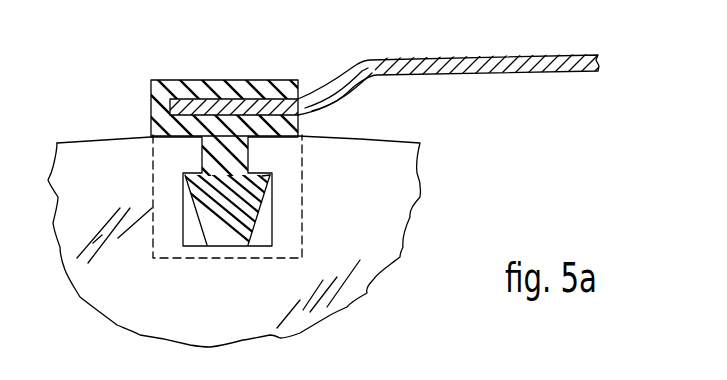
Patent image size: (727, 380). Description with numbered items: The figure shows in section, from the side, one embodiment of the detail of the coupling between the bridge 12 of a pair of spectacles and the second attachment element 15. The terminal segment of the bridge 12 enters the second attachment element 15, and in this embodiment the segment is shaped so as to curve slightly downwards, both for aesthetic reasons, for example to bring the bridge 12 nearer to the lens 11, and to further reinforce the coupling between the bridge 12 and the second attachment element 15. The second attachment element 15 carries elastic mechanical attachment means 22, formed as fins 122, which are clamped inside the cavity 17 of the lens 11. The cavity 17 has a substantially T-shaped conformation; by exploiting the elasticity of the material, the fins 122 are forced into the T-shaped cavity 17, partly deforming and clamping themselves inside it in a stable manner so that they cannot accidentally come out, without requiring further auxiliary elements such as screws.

The lens 11 is at (412, 175).
The bridge 12 is at (535, 62).
The second attachment element 15 is at (195, 82).
The cavity 17 is at (203, 162).
The elastic mechanical attachment means 22 is at (263, 207).
The fins 122 is at (260, 183).